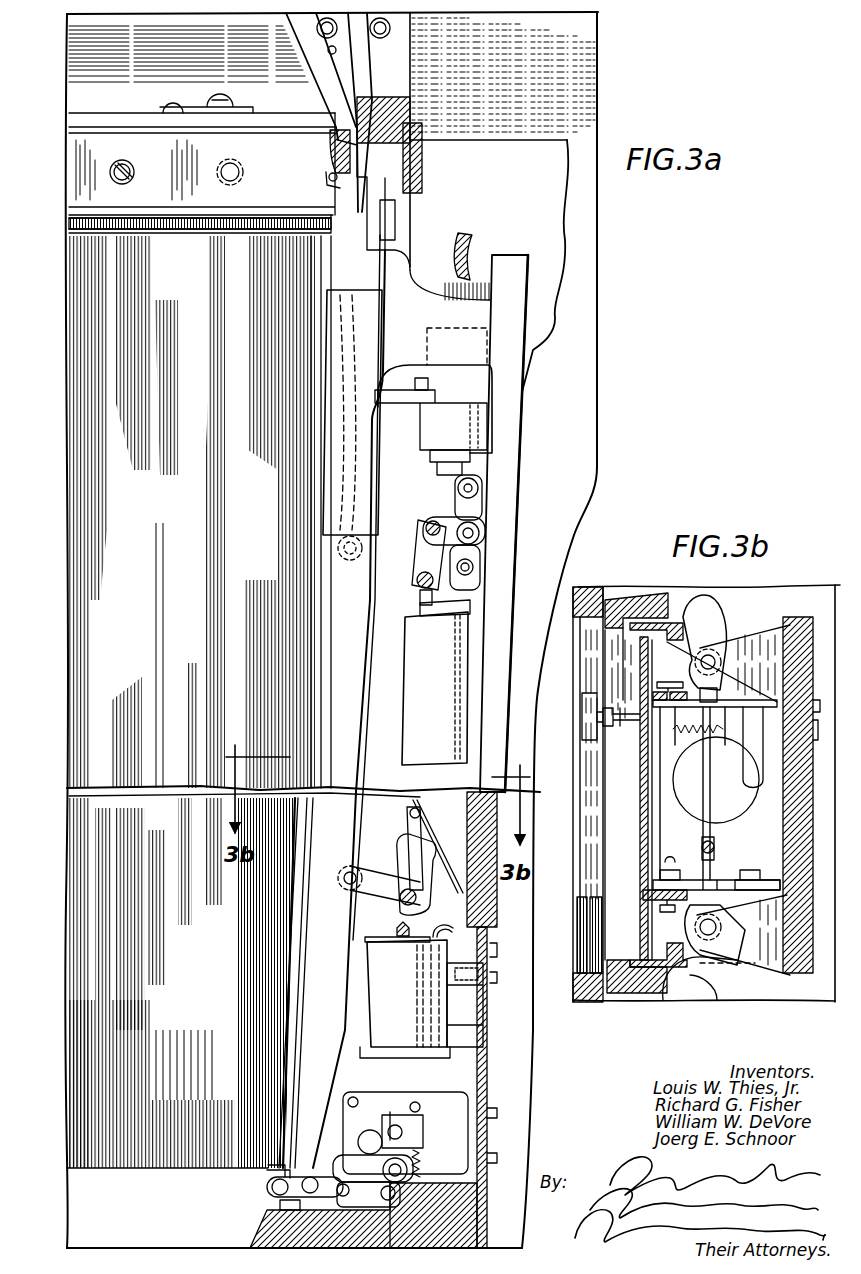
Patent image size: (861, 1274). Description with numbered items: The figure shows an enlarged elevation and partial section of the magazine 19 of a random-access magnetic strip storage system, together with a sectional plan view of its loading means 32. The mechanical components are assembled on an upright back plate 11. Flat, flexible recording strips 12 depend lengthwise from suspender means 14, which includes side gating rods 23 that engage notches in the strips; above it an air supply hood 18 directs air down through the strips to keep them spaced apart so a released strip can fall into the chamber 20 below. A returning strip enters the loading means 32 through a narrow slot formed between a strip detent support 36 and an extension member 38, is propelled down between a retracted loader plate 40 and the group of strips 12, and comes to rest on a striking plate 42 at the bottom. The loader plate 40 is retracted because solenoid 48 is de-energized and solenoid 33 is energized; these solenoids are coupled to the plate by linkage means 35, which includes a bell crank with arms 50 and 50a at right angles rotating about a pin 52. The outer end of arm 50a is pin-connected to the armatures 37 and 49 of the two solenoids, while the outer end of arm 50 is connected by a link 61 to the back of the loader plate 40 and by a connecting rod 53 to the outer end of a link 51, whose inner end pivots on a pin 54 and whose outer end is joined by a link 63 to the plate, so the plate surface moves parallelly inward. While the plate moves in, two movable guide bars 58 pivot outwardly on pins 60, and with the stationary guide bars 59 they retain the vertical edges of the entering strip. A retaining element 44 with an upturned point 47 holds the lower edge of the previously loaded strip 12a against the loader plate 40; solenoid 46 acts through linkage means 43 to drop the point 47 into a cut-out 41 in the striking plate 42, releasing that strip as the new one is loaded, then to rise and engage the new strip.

In FIG. 3A, the upright back plate 11 is at (533, 1076).
In FIG. 3A, the strips 12 is at (206, 331).
In FIG. 3B, the strips 12 is at (573, 926).
In FIG. 3A, the previously loaded strip 12a is at (272, 1055).
In FIG. 3B, the previously loaded strip 12a is at (600, 936).
In FIG. 3A, the suspender means 14 is at (96, 180).
In FIG. 3A, the air supply hood 18 is at (90, 74).
In FIG. 3A, the magazine 19 is at (66, 609).
In FIG. 3A, the chamber 20 is at (92, 1193).
In FIG. 3A, the side gating rods 23 is at (200, 233).
In FIG. 3A, the loading means 32 is at (525, 476).
In FIG. 3B, the loading means 32 is at (806, 616).
In FIG. 3A, the solenoid 33 is at (430, 425).
In FIG. 3A, the linkage means 35 is at (488, 548).
In FIG. 3A, the strip detent support 36 is at (330, 150).
In FIG. 3A, the armature 37 is at (445, 461).
In FIG. 3A, the extension member 38 is at (390, 147).
In FIG. 3A, the loader plate 40 is at (340, 1042).
In FIG. 3B, the loader plate 40 is at (650, 895).
In FIG. 3A, the cut-out 41 is at (425, 1206).
In FIG. 3B, the cut-out 41 is at (583, 708).
In FIG. 3A, the striking plate 42 is at (268, 1207).
In FIG. 3B, the striking plate 42 is at (630, 767).
In FIG. 3A, the linkage means 43 is at (430, 1158).
In FIG. 3A, the retaining element 44 is at (268, 1182).
In FIG. 3B, the retaining element 44 is at (618, 720).
In FIG. 3A, the solenoid 46 is at (440, 1025).
In FIG. 3B, the solenoid 46 is at (688, 781).
In FIG. 3A, the upturned point 47 is at (268, 1167).
In FIG. 3B, the upturned point 47 is at (597, 716).
In FIG. 3A, the solenoid 48 is at (412, 702).
In FIG. 3A, the armature 49 is at (465, 606).
In FIG. 3A, the bell crank arm 50 is at (440, 560).
In FIG. 3A, the bell crank arm 50a is at (485, 528).
In FIG. 3A, the link 51 is at (404, 860).
In FIG. 3B, the link 51 is at (735, 695).
In FIG. 3A, the pin 52 is at (437, 522).
In FIG. 3A, the connecting rod 53 is at (418, 598).
In FIG. 3B, the connecting rod 53 is at (700, 845).
In FIG. 3A, the pin 54 is at (420, 852).
In FIG. 3B, the pin 54 is at (752, 740).
In FIG. 3A, the movable guide bars 58 is at (370, 318).
In FIG. 3B, the movable guide bars 58 is at (617, 603).
In FIG. 3A, the stationary guide bars 59 is at (402, 285).
In FIG. 3B, the stationary guide bars 59 is at (655, 625).
In FIG. 3A, the pins 60 is at (421, 385).
In FIG. 3B, the pins 60 is at (712, 652).
In FIG. 3A, the link 61 is at (390, 573).
In FIG. 3A, the link 63 is at (385, 893).
In FIG. 3B, the link 63 is at (695, 745).